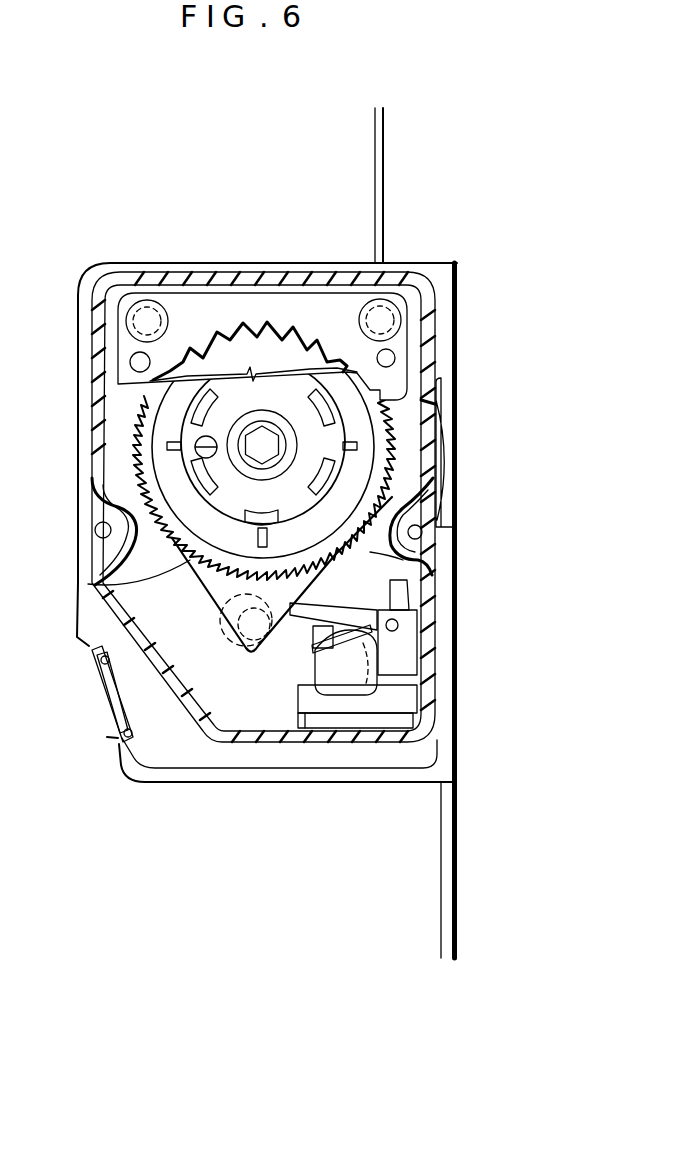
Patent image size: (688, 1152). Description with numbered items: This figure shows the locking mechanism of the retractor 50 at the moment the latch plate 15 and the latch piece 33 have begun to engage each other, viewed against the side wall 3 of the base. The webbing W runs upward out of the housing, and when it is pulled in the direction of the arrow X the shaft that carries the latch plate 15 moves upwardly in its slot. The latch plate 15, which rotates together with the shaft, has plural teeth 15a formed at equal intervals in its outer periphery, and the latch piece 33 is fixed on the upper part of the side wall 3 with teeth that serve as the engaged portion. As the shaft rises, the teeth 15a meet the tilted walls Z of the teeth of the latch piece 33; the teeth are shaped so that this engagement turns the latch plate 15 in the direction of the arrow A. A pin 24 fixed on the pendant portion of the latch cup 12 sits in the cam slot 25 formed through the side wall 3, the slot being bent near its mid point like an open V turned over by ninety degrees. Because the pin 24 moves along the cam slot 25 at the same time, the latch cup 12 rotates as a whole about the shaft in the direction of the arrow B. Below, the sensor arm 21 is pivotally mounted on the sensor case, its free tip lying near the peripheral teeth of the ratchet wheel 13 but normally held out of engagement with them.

The retractor 50 is at (472, 442).
The latch piece 33 is at (199, 307).
The latch plate 15 is at (337, 353).
The teeth 15a is at (322, 360).
The latch cup 12 is at (88, 585).
The ratchet wheel 13 is at (400, 558).
The side wall 3 is at (284, 717).
The cam slot 25 is at (210, 613).
The pin 24 is at (226, 633).
The sensor arm 21 is at (377, 672).
The webbing W is at (375, 130).
The arrow X is at (397, 140).
The tilted walls Z is at (256, 337).
The arrow A is at (215, 316).
The arrow B is at (258, 660).